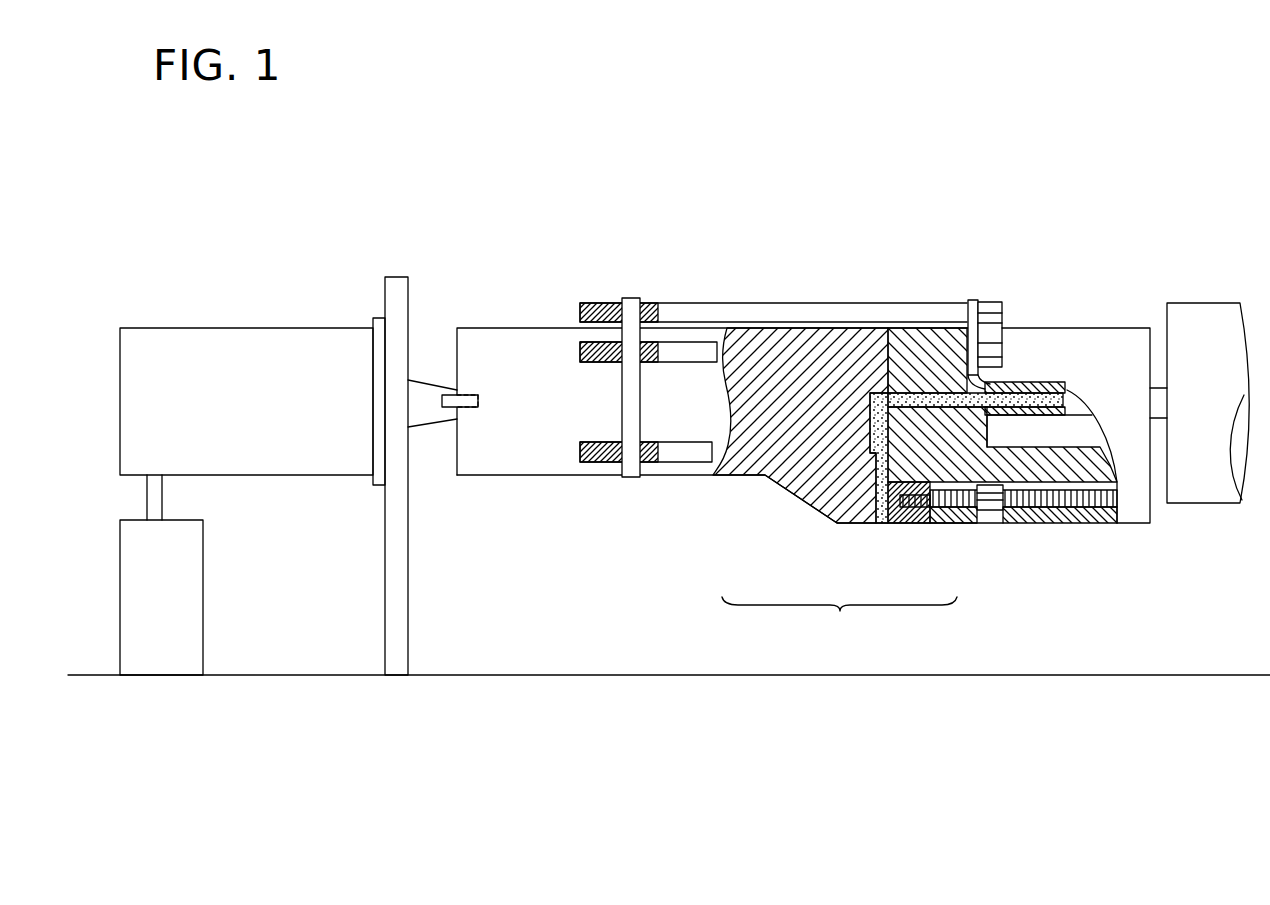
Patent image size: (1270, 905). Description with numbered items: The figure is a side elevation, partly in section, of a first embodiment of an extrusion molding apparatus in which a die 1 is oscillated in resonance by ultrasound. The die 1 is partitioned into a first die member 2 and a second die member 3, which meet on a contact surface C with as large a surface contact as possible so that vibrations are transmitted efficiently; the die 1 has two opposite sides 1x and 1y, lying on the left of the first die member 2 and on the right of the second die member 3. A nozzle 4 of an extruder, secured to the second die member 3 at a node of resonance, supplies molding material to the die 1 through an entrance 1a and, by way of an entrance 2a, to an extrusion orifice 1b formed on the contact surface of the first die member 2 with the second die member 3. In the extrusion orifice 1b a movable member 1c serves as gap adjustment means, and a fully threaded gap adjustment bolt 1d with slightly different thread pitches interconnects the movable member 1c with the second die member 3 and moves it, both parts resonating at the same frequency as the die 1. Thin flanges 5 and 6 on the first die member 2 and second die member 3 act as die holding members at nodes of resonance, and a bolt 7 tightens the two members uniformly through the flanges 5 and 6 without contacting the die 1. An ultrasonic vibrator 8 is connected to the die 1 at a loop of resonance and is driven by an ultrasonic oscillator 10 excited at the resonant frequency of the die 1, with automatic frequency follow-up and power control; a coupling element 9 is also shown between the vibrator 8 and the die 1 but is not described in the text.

The die 1 is at (839, 621).
The entrance 1a is at (935, 390).
The extrusion orifice 1b is at (882, 525).
The movable member 1c is at (913, 525).
The gap adjustment bolt 1d is at (1022, 525).
The side of the die 1x is at (452, 472).
The side of the die 1y is at (1148, 523).
The first die member 2 is at (522, 470).
The entrance 2a is at (800, 495).
The second die member 3 is at (1043, 333).
The nozzle 4 is at (1160, 388).
The flange 5 is at (632, 298).
The flange 6 is at (975, 300).
The bolt 7 is at (828, 308).
The ultrasonic vibrator 8 is at (153, 333).
The coupling pin 9 is at (468, 407).
The ultrasonic oscillator 10 is at (197, 543).
The contact surface C is at (887, 365).